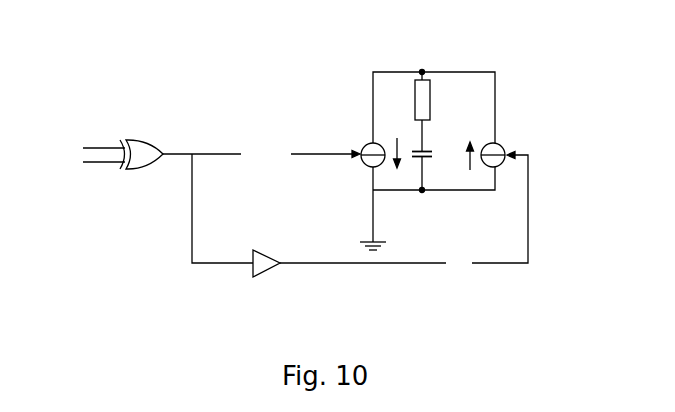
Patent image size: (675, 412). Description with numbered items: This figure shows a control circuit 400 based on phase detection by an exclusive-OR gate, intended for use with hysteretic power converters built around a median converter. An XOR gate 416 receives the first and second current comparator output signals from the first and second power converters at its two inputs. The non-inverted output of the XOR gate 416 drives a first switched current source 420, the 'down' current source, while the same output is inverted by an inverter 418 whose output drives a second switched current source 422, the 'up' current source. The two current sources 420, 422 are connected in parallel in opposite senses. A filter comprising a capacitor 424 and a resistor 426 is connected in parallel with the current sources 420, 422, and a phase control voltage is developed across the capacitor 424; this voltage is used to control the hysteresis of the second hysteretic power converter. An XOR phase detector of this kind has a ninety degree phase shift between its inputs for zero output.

The control circuit 400 is at (127, 285).
The XOR gate 416 is at (152, 125).
The inverter 418 is at (271, 284).
The first switched current source 420 is at (518, 125).
The second switched current source 422 is at (352, 125).
The capacitor 424 is at (442, 172).
The resistor 426 is at (442, 92).